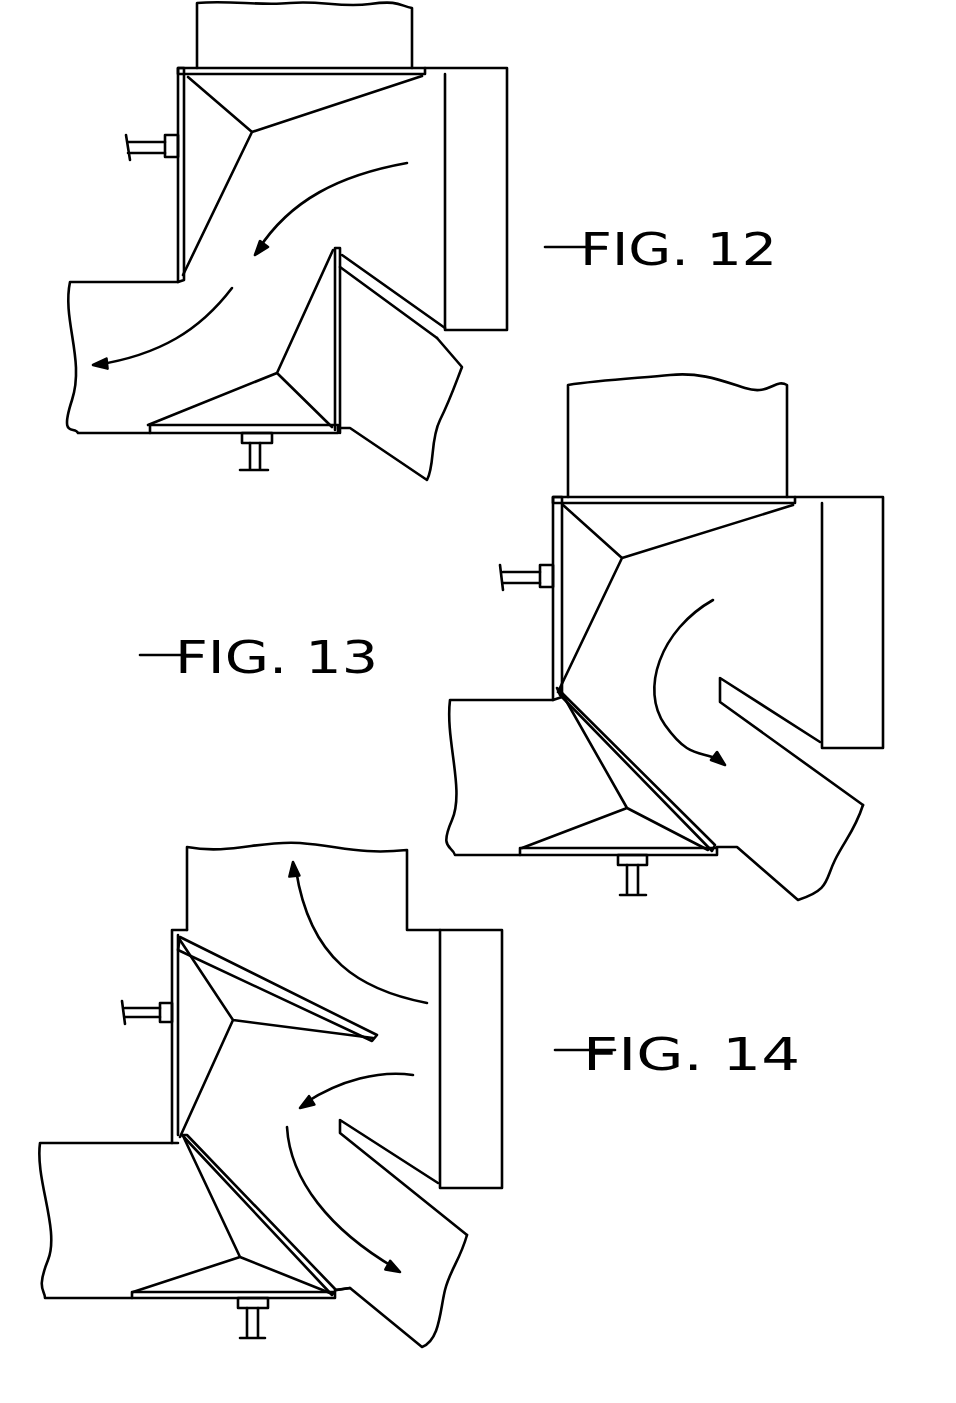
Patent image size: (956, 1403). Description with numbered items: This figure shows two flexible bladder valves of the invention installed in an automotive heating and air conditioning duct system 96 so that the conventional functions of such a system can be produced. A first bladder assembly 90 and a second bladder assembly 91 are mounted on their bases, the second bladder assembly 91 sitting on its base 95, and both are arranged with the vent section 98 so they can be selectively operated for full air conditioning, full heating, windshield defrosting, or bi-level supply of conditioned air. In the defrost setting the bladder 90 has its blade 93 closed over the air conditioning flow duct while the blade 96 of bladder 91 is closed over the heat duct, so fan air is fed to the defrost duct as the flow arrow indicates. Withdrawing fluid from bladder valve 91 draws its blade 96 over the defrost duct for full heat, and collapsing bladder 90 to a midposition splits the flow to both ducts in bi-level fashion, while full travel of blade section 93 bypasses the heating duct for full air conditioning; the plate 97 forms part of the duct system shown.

In FIG. 12, the bladder assembly 90 is at (222, 70).
In FIG. 13, the bladder assembly 90 is at (600, 490).
In FIG. 14, the bladder assembly 90 is at (210, 940).
In FIG. 12, the bladder assembly 91 is at (342, 437).
In FIG. 13, the bladder assembly 91 is at (718, 855).
In FIG. 14, the bladder assembly 91 is at (340, 1300).
In FIG. 12, the blade 93 is at (345, 70).
In FIG. 13, the blade 93 is at (722, 497).
In FIG. 14, the blade 93 is at (296, 987).
In FIG. 12, the base 95 is at (190, 440).
In FIG. 13, the base 95 is at (573, 860).
In FIG. 14, the base 95 is at (197, 1303).
In FIG. 12, the blade 96 is at (342, 333).
In FIG. 13, the blade 96 is at (610, 727).
In FIG. 14, the blade 96 is at (245, 1195).
In FIG. 14, the chute plate 97 is at (402, 1152).
In FIG. 14, the vent section 98 is at (502, 1098).